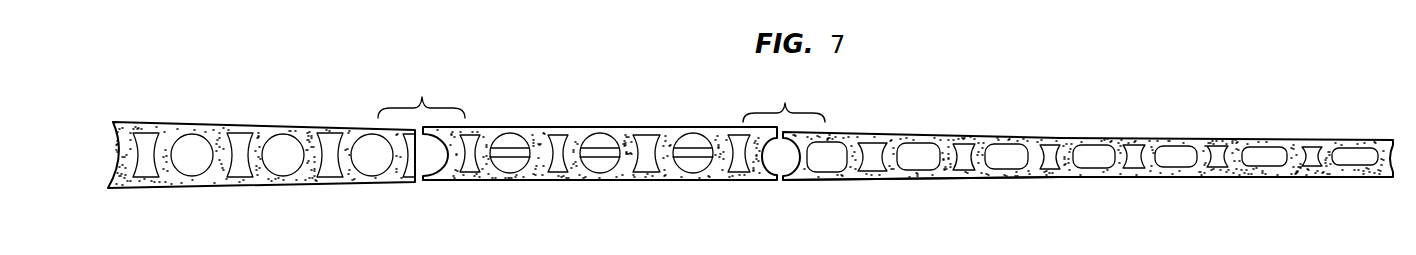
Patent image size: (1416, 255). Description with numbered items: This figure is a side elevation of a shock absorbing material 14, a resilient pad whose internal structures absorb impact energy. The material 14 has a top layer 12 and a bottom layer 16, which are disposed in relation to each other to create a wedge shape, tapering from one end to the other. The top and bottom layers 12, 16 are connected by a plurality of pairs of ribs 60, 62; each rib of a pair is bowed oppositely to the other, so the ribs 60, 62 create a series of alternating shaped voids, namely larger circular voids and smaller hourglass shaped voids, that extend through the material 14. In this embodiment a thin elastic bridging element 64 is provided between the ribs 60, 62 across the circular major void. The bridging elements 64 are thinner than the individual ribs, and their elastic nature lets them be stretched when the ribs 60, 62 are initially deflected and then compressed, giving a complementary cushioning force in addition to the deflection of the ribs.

The top layer 12 is at (1047, 137).
The material 14 is at (118, 148).
The bottom layer 16 is at (1023, 182).
The rib 60 is at (803, 165).
The rib 62 is at (850, 168).
The bridging element 64 is at (600, 157).